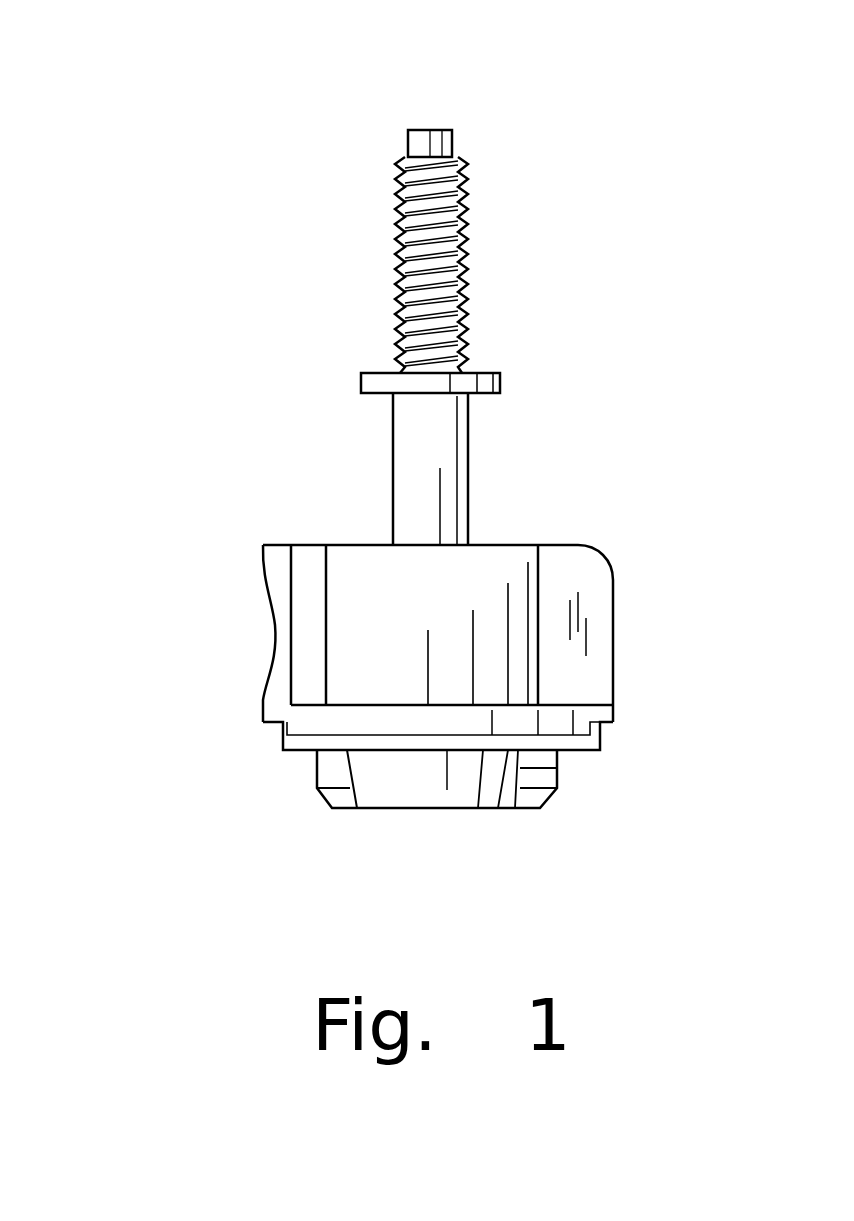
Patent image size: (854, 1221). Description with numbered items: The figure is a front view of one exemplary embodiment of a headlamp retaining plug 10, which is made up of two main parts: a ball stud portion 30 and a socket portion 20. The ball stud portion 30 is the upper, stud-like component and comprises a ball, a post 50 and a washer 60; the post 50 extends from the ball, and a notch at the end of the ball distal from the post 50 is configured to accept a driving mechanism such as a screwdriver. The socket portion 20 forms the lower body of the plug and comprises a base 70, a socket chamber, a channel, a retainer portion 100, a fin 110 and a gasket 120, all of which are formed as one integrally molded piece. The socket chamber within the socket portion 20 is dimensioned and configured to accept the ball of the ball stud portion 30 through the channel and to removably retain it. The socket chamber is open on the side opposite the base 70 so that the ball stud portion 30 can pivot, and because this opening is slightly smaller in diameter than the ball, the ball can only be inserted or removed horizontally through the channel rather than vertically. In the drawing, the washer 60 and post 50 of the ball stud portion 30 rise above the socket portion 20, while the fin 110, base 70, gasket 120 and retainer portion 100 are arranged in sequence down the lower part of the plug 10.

The headlamp retaining plug 10 is at (181, 120).
The socket portion 20 is at (549, 545).
The ball stud portion 30 is at (473, 262).
The post 50 is at (395, 250).
The washer 60 is at (360, 388).
The base 70 is at (613, 715).
The retainer portion 100 is at (560, 790).
The fin 110 is at (613, 608).
The gasket 120 is at (283, 755).